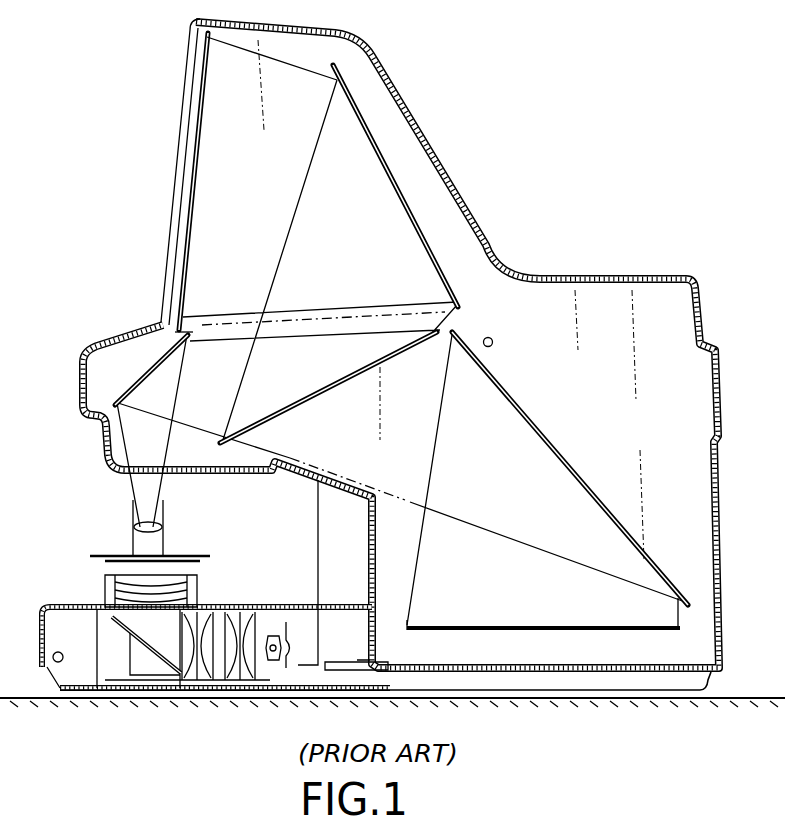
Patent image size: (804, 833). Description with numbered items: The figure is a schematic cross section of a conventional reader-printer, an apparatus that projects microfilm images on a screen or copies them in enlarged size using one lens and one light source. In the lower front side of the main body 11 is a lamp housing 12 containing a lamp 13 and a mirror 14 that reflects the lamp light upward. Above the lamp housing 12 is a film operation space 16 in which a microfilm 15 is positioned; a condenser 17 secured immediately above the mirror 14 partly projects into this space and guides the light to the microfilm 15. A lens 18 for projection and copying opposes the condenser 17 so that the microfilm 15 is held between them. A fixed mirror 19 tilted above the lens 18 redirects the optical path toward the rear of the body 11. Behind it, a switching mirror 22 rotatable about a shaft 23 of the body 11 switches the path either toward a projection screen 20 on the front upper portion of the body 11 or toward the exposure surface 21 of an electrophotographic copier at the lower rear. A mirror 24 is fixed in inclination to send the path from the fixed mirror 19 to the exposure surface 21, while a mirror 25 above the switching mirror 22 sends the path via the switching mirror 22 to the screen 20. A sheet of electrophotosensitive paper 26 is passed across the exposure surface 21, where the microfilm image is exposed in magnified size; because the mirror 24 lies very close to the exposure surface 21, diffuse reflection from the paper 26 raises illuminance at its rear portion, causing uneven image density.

The main body 11 is at (482, 214).
The lamp housing 12 is at (275, 608).
The lamp 13 is at (280, 670).
The mirror 14 is at (160, 672).
The microfilm 15 is at (90, 556).
The film operation space 16 is at (279, 537).
The condenser 17 is at (105, 595).
The lens 18 is at (138, 527).
The fixed mirror 19 is at (140, 370).
The projection screen 20 is at (192, 184).
The exposure surface 21 is at (555, 645).
The switching mirror 22 is at (318, 397).
The shaft 23 is at (492, 338).
The mirror 24 is at (548, 430).
The mirror 25 is at (400, 178).
The electrophotosensitive paper 26 is at (508, 628).